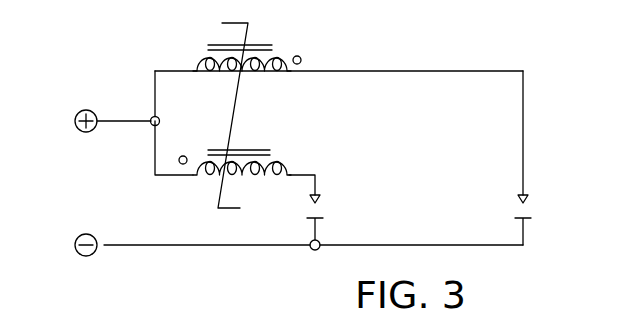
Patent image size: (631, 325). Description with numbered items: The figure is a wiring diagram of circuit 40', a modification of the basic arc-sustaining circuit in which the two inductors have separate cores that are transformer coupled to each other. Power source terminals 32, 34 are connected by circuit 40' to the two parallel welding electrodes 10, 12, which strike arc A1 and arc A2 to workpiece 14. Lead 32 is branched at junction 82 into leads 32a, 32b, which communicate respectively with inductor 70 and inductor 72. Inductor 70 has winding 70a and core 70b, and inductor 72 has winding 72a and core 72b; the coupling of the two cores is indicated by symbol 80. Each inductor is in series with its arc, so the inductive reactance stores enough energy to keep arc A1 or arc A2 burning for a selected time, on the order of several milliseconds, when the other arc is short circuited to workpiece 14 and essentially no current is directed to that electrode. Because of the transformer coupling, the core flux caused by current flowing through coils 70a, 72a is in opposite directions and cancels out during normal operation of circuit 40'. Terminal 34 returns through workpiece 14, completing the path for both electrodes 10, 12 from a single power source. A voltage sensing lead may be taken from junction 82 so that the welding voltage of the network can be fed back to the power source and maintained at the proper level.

The electrode 10 is at (315, 183).
The electrode 12 is at (523, 148).
The workpiece 14 is at (490, 245).
The terminal 32 is at (118, 119).
The lead 32a is at (152, 148).
The lead 32b is at (153, 95).
The terminal 34 is at (128, 247).
The circuit 40' is at (356, 40).
The inductor 70 is at (278, 150).
The winding 70a is at (208, 187).
The core 70b is at (250, 147).
The inductor 72 is at (277, 45).
The winding 72a is at (275, 78).
The core 72b is at (255, 43).
The symbol 80 is at (237, 100).
The junction 82 is at (150, 124).
The arc A1 is at (320, 208).
The arc A2 is at (533, 202).